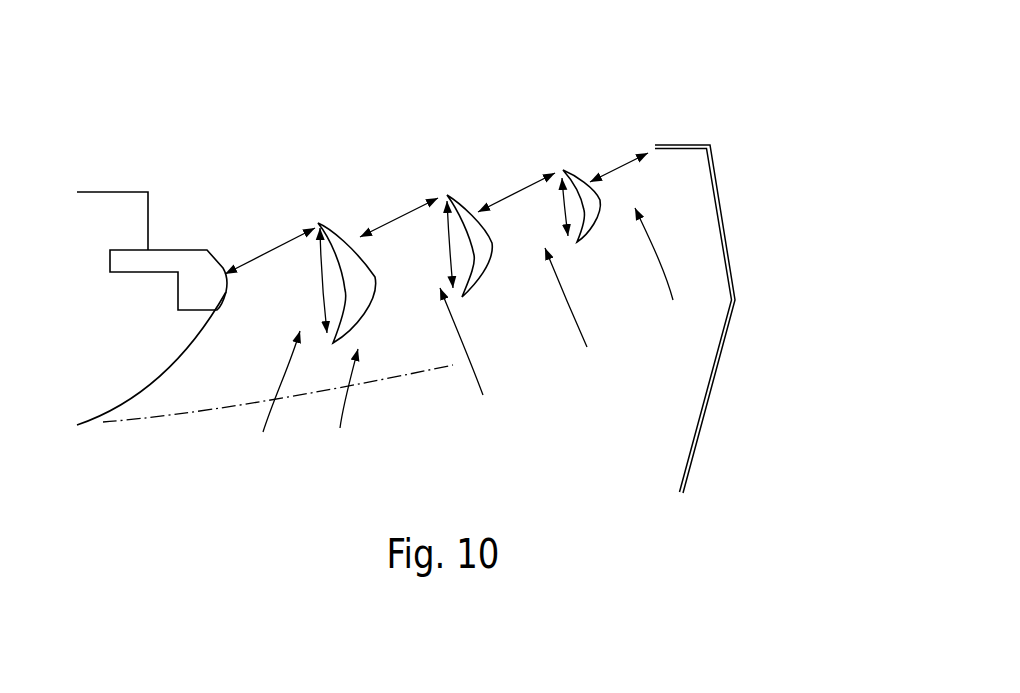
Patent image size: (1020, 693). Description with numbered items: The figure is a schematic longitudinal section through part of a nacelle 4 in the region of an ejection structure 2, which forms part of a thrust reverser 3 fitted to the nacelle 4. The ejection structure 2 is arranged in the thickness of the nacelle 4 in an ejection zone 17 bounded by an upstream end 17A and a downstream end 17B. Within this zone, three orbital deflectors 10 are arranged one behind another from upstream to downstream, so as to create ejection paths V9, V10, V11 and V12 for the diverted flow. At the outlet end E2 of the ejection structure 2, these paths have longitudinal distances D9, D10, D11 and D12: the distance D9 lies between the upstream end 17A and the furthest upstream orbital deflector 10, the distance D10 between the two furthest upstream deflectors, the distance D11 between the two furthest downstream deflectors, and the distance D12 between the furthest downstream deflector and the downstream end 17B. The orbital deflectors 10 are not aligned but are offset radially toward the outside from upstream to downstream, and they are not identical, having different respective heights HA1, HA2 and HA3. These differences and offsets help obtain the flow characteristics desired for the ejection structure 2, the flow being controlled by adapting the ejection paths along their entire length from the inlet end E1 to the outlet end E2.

The ejection structure 2 is at (392, 153).
The thrust reverser 3 is at (682, 250).
The nacelle 4 is at (265, 266).
The orbital deflector 10 is at (478, 209).
The ejection zone 17 is at (459, 209).
The upstream end of the ejection zone 17A is at (208, 226).
The downstream end of the ejection zone 17B is at (657, 142).
The distance D9 is at (258, 257).
The distance D10 is at (393, 223).
The distance D11 is at (512, 195).
The distance D12 is at (616, 169).
The inlet end E1 is at (341, 406).
The outlet end E2 is at (453, 184).
The height HA1 is at (321, 288).
The height HA2 is at (448, 243).
The height HA3 is at (564, 208).
The ejection path V9 is at (275, 397).
The ejection path V10 is at (474, 360).
The ejection path V11 is at (576, 313).
The ejection path V12 is at (668, 272).